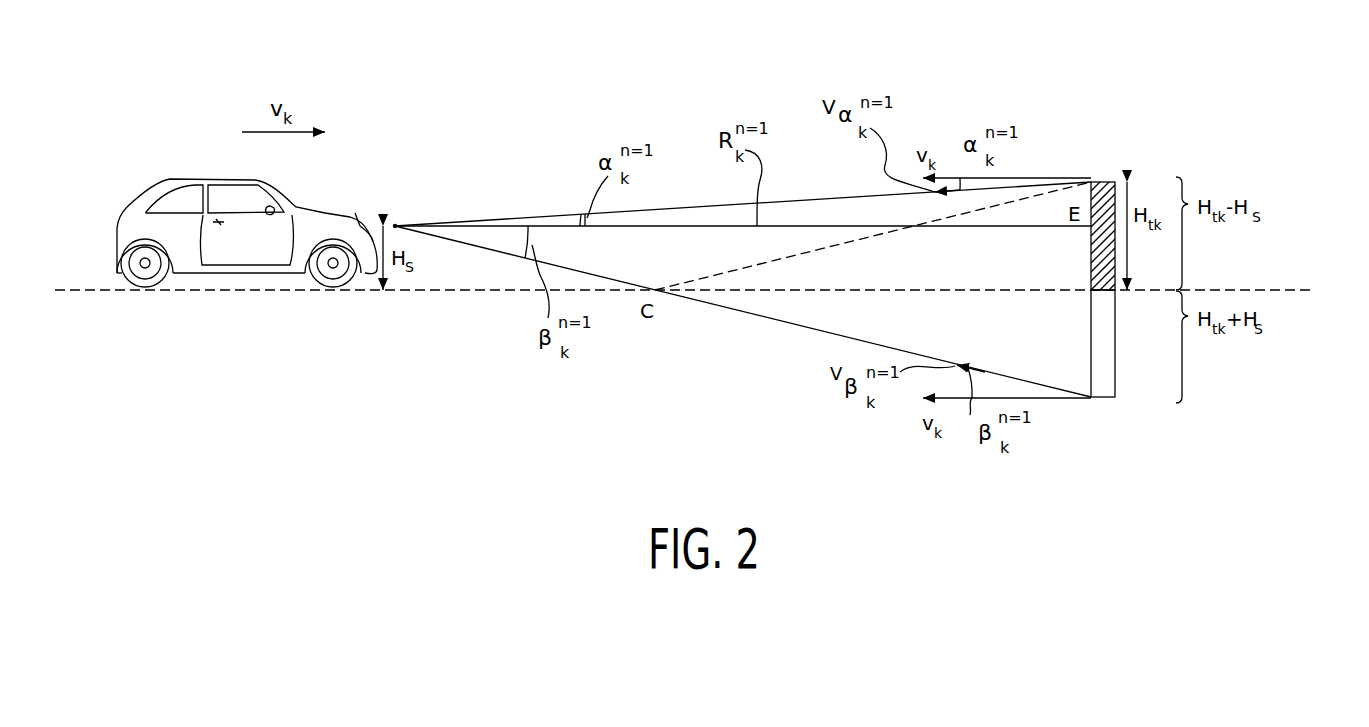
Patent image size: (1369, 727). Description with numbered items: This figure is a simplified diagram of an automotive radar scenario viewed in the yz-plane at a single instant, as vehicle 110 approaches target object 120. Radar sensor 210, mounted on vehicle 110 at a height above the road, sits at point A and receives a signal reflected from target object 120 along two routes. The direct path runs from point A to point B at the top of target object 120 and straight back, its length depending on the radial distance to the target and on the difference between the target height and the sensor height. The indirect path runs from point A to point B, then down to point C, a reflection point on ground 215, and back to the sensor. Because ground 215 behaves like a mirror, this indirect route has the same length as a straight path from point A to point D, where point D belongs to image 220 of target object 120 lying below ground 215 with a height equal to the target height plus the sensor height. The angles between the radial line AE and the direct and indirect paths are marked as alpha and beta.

The vehicle 110 is at (162, 178).
The target object 120 is at (1107, 183).
The radar sensor 210 is at (398, 222).
The ground 215 is at (1278, 290).
The image 220 is at (1108, 398).